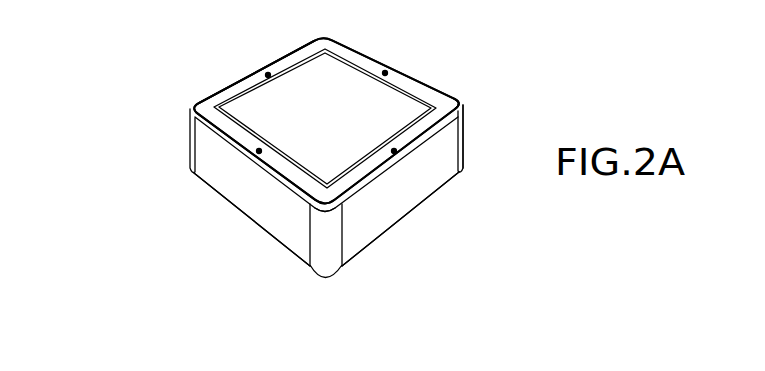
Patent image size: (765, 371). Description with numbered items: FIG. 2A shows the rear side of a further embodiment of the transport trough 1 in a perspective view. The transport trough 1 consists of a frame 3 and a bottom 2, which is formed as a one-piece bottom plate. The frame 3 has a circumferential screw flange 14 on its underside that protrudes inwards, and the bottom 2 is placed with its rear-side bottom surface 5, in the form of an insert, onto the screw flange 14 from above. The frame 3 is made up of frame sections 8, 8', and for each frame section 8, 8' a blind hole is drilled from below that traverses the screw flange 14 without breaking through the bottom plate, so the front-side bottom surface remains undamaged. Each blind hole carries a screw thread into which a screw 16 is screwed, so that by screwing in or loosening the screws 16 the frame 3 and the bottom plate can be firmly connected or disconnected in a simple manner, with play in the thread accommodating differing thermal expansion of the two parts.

The transport trough 1 is at (158, 150).
The bottom 2 is at (406, 76).
The frame 3 is at (400, 222).
The rear-side bottom surface 5 is at (324, 128).
The frame section 8 is at (364, 186).
The frame section 8' is at (351, 115).
The screw flange 14 is at (279, 172).
The screw 16 is at (266, 74).